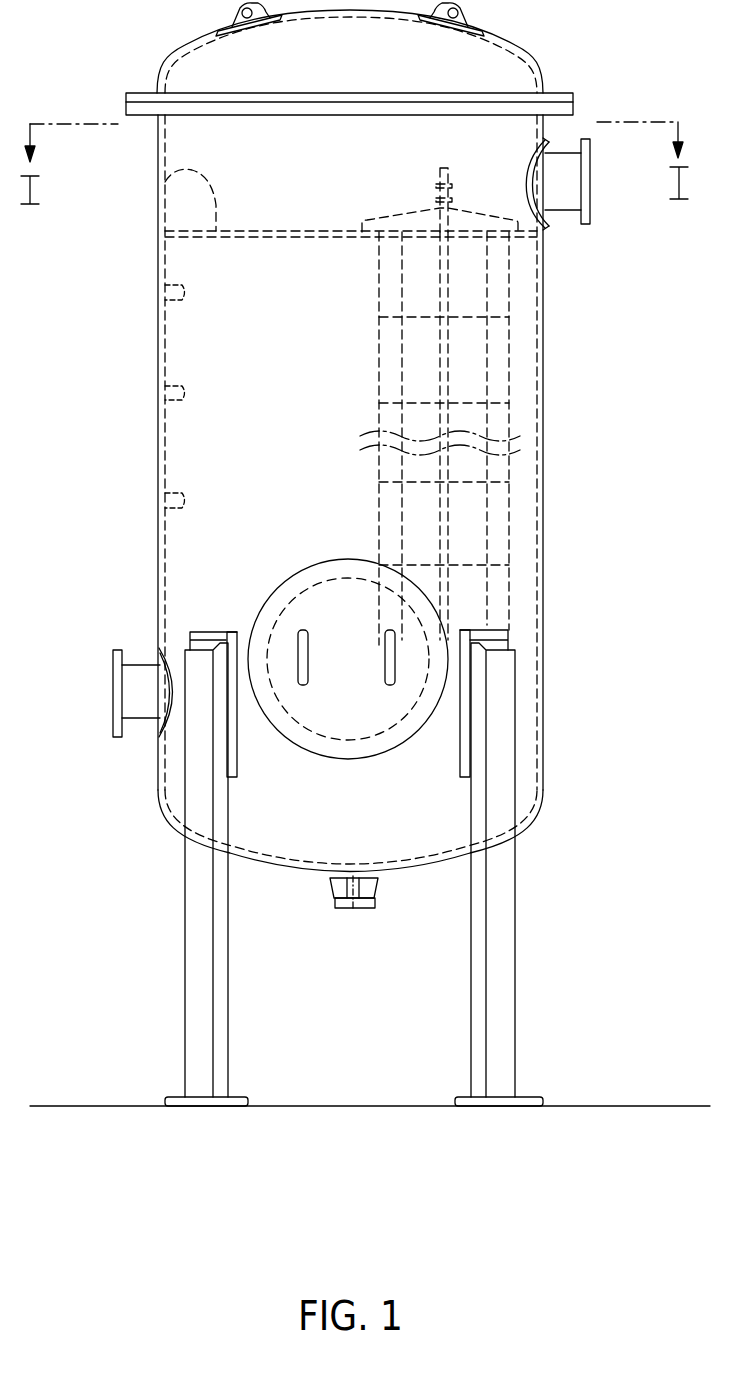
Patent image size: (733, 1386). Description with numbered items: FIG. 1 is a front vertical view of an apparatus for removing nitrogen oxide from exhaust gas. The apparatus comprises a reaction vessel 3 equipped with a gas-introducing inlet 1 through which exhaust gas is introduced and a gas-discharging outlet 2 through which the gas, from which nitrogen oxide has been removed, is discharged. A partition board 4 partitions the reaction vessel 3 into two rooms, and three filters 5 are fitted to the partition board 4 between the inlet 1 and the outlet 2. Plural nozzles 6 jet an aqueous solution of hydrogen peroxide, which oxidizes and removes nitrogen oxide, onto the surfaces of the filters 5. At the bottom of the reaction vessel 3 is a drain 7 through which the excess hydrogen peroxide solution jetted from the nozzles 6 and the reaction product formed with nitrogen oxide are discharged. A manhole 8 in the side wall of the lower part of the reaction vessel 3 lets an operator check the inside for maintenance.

The gas-introducing inlet 1 is at (143, 690).
The gas-discharging outlet 2 is at (563, 188).
The reaction vessel 3 is at (545, 582).
The partition board 4 is at (160, 178).
The filters 5 is at (500, 370).
The nozzles 6 is at (168, 292).
The drain 7 is at (354, 908).
The manhole 8 is at (328, 710).